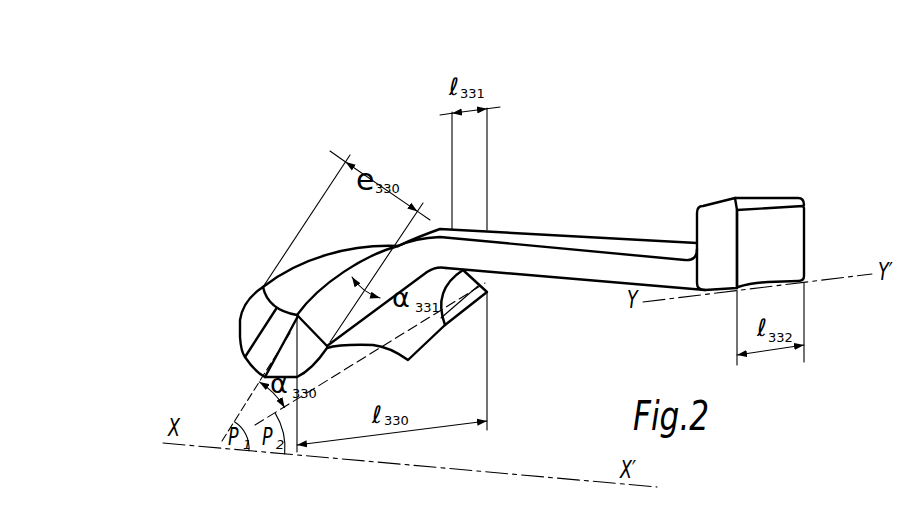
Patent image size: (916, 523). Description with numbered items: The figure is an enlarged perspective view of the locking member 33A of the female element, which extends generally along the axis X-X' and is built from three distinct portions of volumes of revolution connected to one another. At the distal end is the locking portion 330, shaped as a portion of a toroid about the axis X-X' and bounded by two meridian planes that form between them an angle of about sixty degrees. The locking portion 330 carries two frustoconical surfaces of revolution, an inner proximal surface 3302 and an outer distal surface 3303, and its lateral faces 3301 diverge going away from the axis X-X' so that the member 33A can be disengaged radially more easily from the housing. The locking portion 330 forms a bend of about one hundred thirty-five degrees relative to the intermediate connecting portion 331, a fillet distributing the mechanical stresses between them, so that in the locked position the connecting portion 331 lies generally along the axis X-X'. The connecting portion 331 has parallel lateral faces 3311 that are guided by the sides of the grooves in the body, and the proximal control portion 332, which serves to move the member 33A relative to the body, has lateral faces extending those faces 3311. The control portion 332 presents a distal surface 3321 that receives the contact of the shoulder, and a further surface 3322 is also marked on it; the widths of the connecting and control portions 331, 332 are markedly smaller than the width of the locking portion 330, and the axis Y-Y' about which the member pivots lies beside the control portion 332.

The locking member 33A is at (282, 203).
The locking portion 330 is at (307, 275).
The lateral faces of the locking portion 3301 is at (272, 335).
The inner proximal surface 3302 is at (378, 337).
The outer distal surface 3303 is at (244, 301).
The connecting portion 331 is at (513, 228).
The lateral faces of the connecting portion 3311 is at (635, 237).
The control portion 332 is at (737, 203).
The distal surface of the control portion 3321 is at (696, 232).
The front face of end block 3322 is at (782, 232).